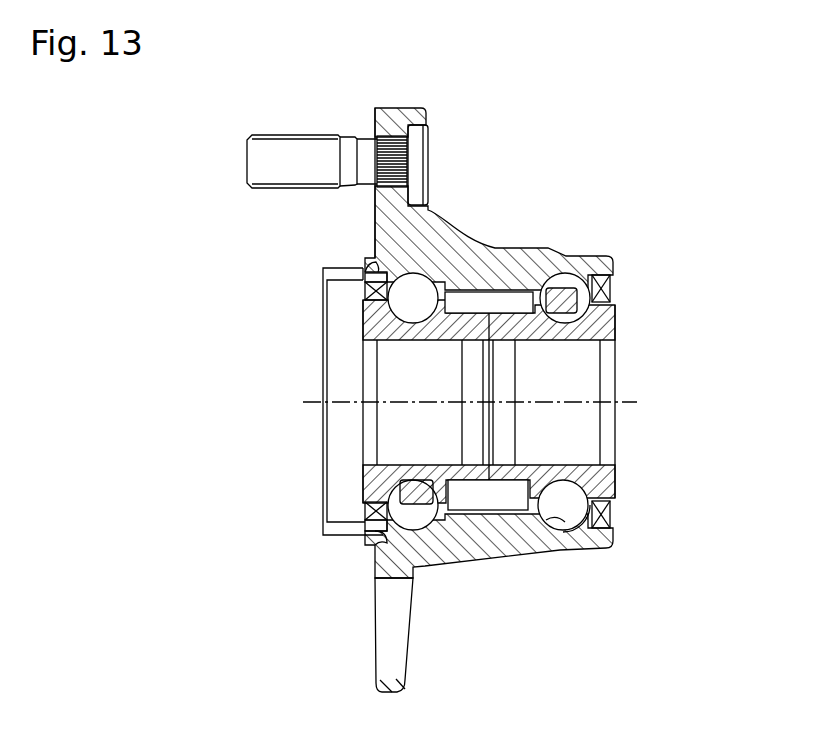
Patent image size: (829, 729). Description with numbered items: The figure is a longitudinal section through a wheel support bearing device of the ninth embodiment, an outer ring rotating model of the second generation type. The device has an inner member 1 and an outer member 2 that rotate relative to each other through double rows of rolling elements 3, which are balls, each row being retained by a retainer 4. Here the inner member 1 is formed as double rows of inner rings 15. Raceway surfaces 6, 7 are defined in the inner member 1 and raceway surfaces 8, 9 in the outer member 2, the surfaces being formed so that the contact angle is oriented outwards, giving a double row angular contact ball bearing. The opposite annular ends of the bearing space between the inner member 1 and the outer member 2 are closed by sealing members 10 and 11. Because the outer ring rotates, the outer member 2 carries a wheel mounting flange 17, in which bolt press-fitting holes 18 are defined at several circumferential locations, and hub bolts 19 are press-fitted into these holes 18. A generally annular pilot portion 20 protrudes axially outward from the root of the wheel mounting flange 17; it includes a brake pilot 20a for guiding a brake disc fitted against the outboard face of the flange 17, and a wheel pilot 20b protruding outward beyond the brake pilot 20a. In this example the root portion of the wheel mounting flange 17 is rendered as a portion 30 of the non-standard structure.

The inner member 1 is at (220, 367).
The outer member 2 is at (512, 243).
The rolling elements 3 is at (415, 292).
The retainer 4 is at (533, 500).
The raceway surface 6 is at (385, 533).
The raceway surface 7 is at (578, 528).
The raceway surface 8 is at (422, 518).
The raceway surface 9 is at (556, 521).
The sealing member 10 is at (367, 509).
The sealing member 11 is at (612, 513).
The inner rings 15 is at (395, 336).
The wheel mounting flange 17 is at (390, 118).
The bolt press-fitting holes 18 is at (407, 148).
The hub bolts 19 is at (290, 146).
The pilot portion 20 is at (173, 233).
The brake pilot 20a is at (330, 266).
The wheel pilot 20b is at (332, 266).
The portion of the non-standard structure 30 is at (376, 254).